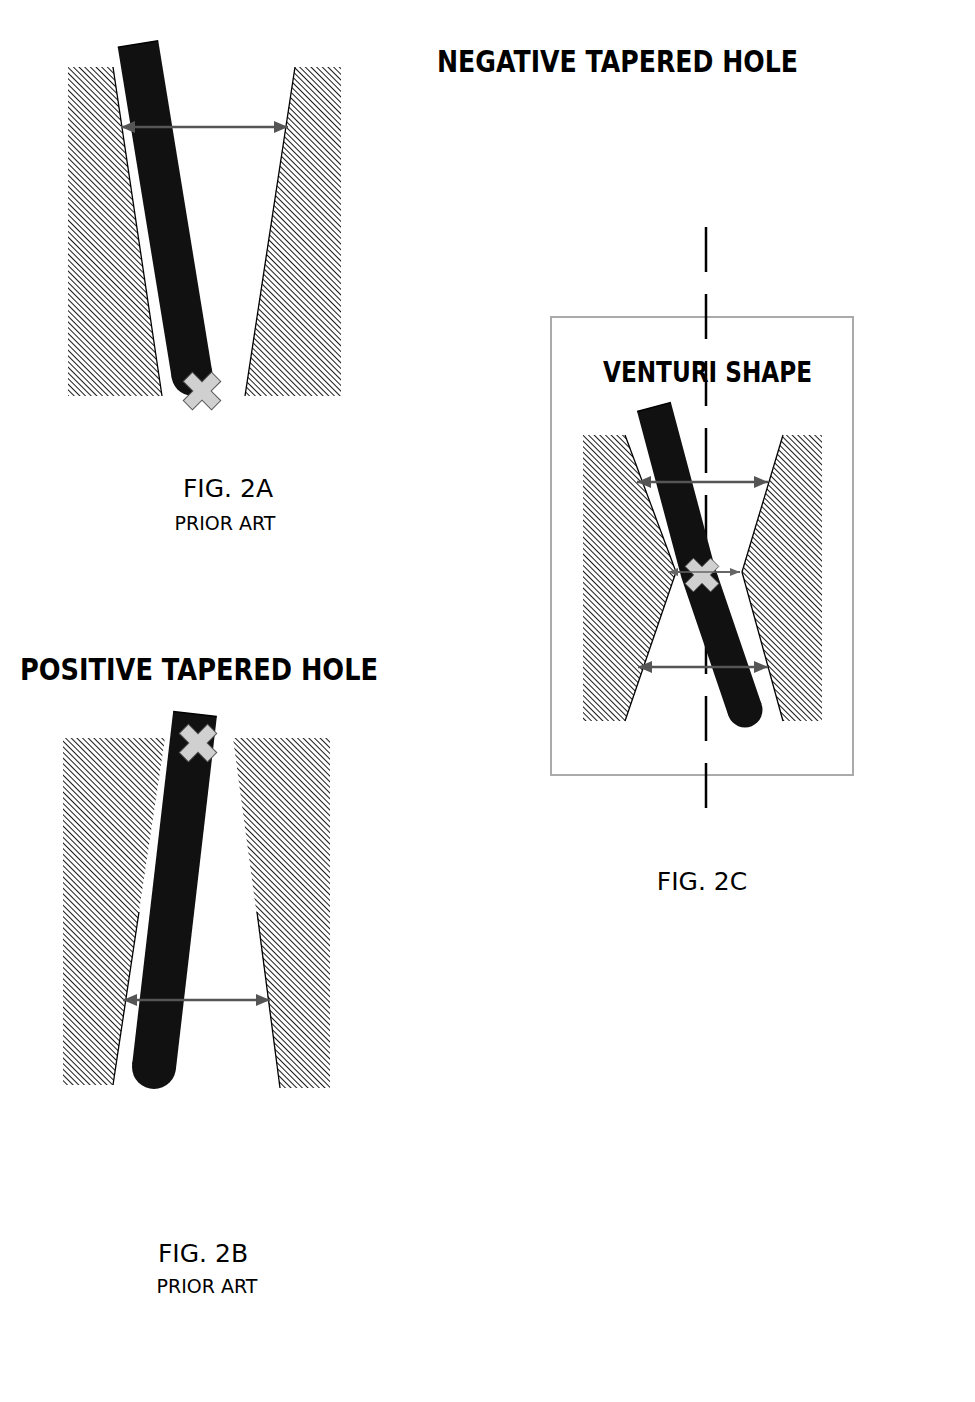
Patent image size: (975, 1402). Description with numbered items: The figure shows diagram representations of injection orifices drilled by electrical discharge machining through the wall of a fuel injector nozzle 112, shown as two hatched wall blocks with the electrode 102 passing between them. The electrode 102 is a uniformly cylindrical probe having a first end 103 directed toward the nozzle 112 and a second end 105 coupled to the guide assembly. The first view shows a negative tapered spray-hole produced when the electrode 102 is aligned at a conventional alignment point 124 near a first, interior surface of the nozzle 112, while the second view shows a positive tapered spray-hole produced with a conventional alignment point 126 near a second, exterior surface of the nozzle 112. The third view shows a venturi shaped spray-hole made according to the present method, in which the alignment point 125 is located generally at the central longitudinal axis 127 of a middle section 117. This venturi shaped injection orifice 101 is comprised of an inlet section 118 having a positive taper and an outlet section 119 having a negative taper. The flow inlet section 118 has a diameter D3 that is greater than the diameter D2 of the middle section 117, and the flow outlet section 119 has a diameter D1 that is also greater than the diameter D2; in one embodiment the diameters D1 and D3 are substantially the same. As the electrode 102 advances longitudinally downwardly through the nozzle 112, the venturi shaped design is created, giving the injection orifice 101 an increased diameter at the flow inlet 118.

In FIG. 2C, the injection orifice 101 is at (626, 428).
In FIG. 2A, the electrode 102 is at (111, 202).
In FIG. 2B, the electrode 102 is at (126, 951).
In FIG. 2C, the electrode 102 is at (786, 616).
In FIG. 2A, the first end 103 is at (106, 407).
In FIG. 2B, the first end 103 is at (99, 1094).
In FIG. 2C, the first end 103 is at (797, 772).
In FIG. 2A, the second end 105 is at (187, 41).
In FIG. 2B, the second end 105 is at (241, 709).
In FIG. 2C, the second end 105 is at (570, 369).
In FIG. 2A, the fuel injector nozzle 112 is at (247, 231).
In FIG. 2B, the fuel injector nozzle 112 is at (258, 890).
In FIG. 2C, the fuel injector nozzle 112 is at (633, 574).
In FIG. 2C, the middle section 117 is at (595, 538).
In FIG. 2B, the inlet section 118 is at (196, 1053).
In FIG. 2C, the inlet section 118 is at (671, 695).
In FIG. 2A, the outlet section 119 is at (252, 209).
In FIG. 2C, the outlet section 119 is at (767, 474).
In FIG. 2A, the conventional alignment point 124 is at (154, 428).
In FIG. 2C, the alignment point 125 is at (586, 593).
In FIG. 2B, the conventional alignment point 126 is at (137, 734).
In FIG. 2C, the central longitudinal axis 127 is at (770, 502).
In FIG. 2A, the diameter of outlet section D1 is at (305, 202).
In FIG. 2C, the diameter of outlet section D1 is at (774, 565).
In FIG. 2C, the diameter of middle section D2 is at (792, 642).
In FIG. 2B, the diameter of inlet section D3 is at (231, 1078).
In FIG. 2C, the diameter of inlet section D3 is at (777, 713).